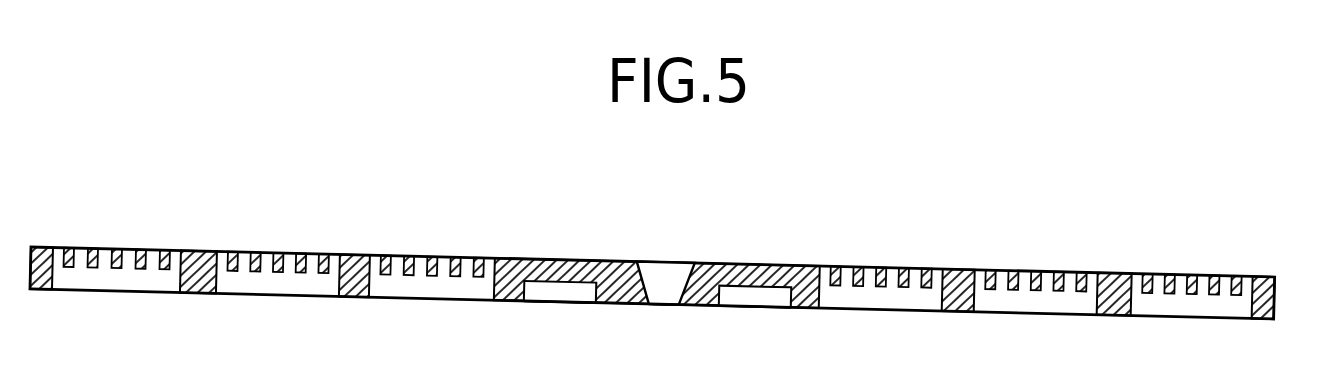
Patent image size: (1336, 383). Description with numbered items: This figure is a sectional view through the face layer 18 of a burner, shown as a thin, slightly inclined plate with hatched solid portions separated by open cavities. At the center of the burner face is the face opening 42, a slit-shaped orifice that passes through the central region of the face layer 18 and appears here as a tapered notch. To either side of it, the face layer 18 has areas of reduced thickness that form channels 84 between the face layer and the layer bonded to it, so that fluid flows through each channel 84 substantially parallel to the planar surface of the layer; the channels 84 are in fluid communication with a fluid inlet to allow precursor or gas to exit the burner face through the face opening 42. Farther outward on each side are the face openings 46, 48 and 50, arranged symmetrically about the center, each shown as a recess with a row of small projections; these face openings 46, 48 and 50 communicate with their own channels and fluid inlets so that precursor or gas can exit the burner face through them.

The face layer 18 is at (1277, 301).
The face opening 42 is at (673, 270).
The face opening 46 is at (655, 234).
The face opening 48 is at (656, 235).
The face opening 50 is at (653, 237).
The channel 84 is at (572, 303).